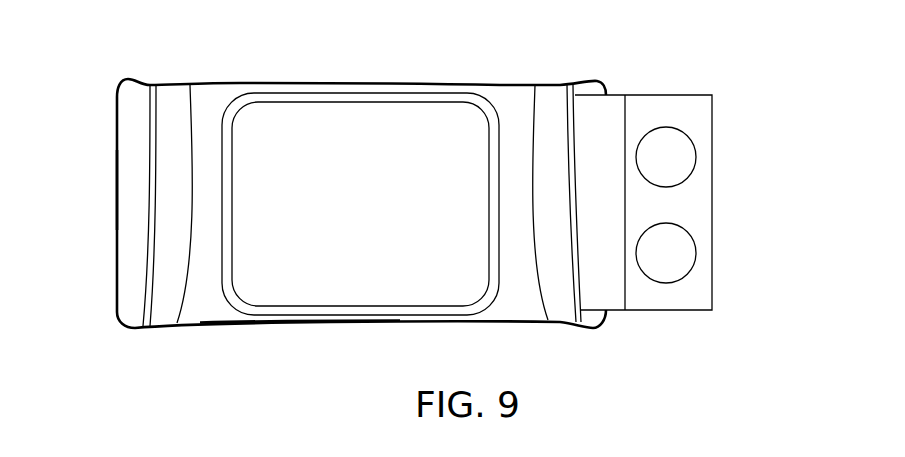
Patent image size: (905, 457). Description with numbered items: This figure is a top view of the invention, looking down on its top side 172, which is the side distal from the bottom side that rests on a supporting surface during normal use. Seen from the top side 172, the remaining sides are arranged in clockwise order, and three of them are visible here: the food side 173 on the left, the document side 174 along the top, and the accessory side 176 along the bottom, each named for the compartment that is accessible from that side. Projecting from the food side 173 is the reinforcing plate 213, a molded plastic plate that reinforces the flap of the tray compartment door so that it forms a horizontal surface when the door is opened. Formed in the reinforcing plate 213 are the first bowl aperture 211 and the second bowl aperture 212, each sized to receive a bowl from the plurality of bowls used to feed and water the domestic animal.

The top side 172 is at (505, 113).
The food side 173 is at (115, 192).
The document side 174 is at (283, 86).
The accessory side 176 is at (278, 325).
The first bowl aperture 211 is at (682, 238).
The second bowl aperture 212 is at (678, 153).
The reinforcing plate 213 is at (698, 197).